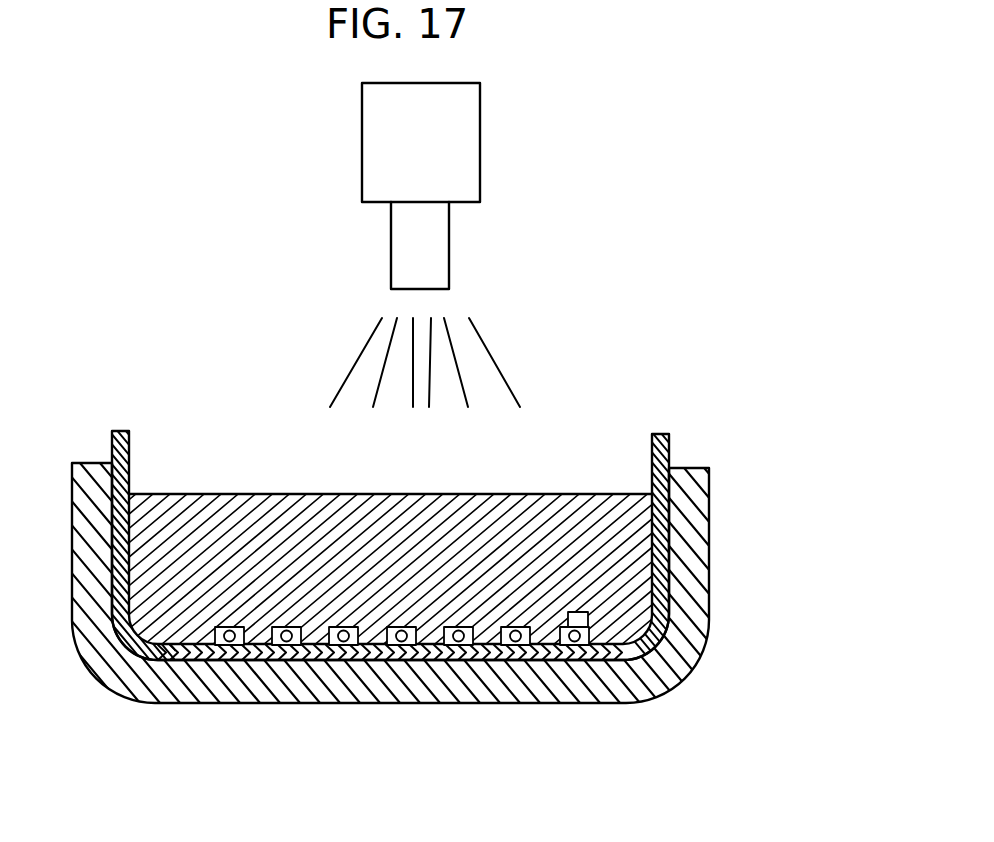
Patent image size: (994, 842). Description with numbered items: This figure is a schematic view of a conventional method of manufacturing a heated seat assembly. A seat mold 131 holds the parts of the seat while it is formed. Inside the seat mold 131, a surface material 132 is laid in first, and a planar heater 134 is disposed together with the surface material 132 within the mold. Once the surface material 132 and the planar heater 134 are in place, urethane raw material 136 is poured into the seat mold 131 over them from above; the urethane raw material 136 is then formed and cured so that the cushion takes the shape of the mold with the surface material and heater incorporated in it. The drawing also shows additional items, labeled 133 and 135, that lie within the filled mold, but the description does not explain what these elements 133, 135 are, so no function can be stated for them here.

The seat mold 131 is at (665, 668).
The surface material 132 is at (668, 451).
The substrates 133 is at (250, 632).
The planar heater 134 is at (212, 652).
The solution 135 is at (637, 577).
The urethane raw material 136 is at (495, 360).